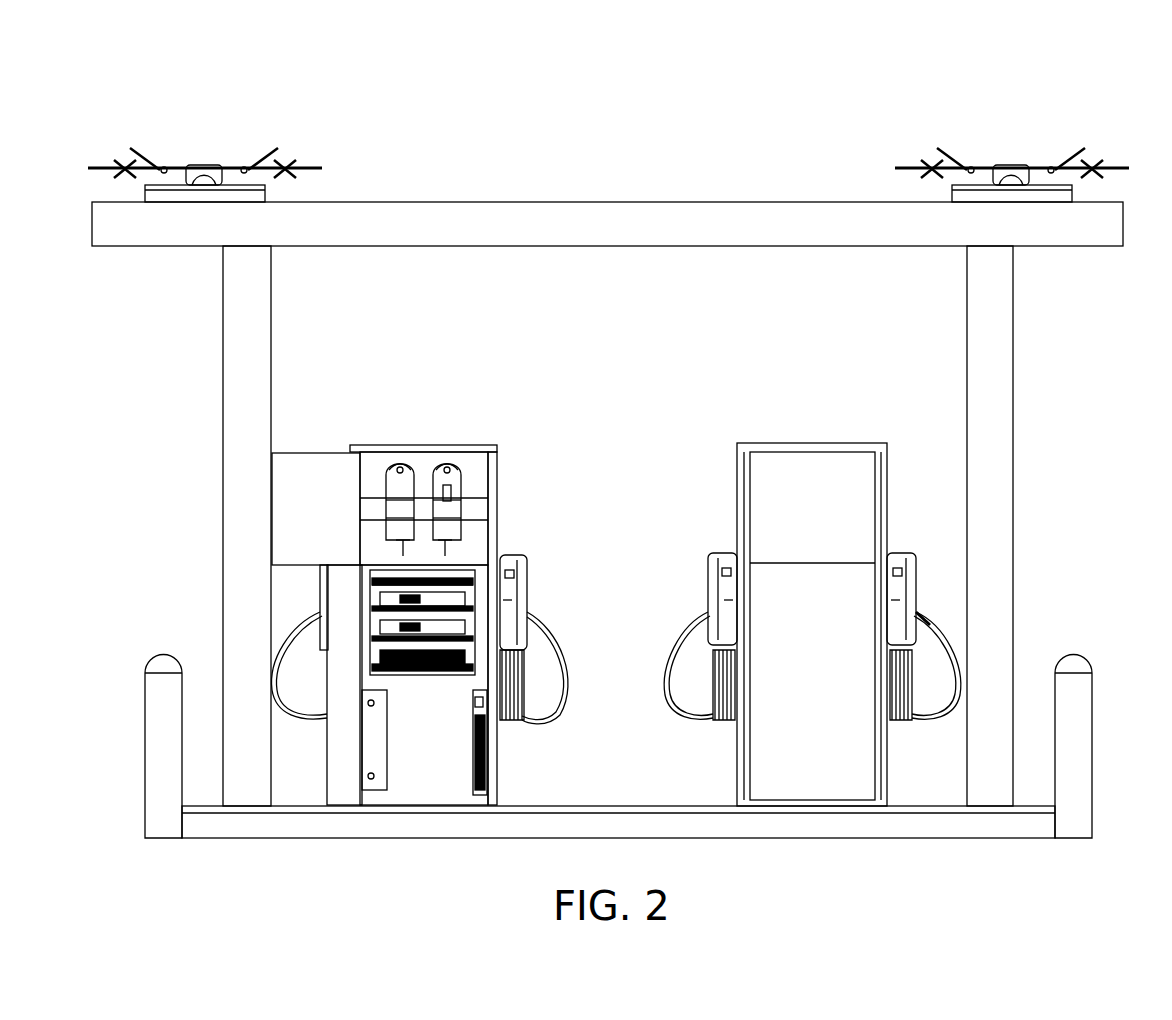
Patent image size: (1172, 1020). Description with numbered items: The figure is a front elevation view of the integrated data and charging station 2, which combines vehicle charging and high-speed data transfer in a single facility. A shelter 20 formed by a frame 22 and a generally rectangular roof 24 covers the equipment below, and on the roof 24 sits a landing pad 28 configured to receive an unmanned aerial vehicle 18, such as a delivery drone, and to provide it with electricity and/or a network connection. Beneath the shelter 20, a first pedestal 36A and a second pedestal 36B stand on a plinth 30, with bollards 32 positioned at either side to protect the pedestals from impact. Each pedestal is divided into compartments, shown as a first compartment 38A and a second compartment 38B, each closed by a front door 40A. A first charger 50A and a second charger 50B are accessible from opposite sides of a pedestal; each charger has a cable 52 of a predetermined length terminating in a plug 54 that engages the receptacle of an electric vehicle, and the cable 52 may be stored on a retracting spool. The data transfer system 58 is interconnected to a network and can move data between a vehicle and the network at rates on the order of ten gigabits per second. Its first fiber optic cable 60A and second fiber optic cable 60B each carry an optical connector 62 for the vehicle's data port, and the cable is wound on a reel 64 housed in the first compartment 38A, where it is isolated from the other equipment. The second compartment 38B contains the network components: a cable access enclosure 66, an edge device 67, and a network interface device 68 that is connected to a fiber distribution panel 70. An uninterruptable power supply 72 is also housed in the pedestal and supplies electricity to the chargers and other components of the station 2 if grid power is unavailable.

The integrated data and charging station 2 is at (910, 72).
The unmanned aerial vehicle 18 is at (1012, 164).
The shelter 20 is at (686, 158).
The frame 22 is at (1013, 326).
The roof 24 is at (612, 201).
The landing pad 28 is at (1072, 190).
The plinth 30 is at (1033, 830).
The bollard 32 is at (1080, 776).
The first pedestal 36A is at (436, 370).
The second pedestal 36B is at (830, 374).
The first compartment 38A is at (476, 470).
The second compartment 38B is at (448, 779).
The front door 40A is at (338, 497).
The first charger 50A is at (710, 562).
The second charger 50B is at (905, 558).
The cable 52 is at (560, 718).
The plug 54 is at (925, 606).
The data transfer system 58 is at (523, 498).
The first fiber optic cable 60A is at (400, 552).
The second fiber optic cable 60B is at (450, 552).
The optical connector 62 is at (396, 466).
The reel 64 is at (428, 468).
The cable access enclosure 66 is at (375, 588).
The edge device 67 is at (455, 607).
The network interface device 68 is at (373, 668).
The fiber distribution panel 70 is at (373, 792).
The uninterruptable power supply 72 is at (485, 768).